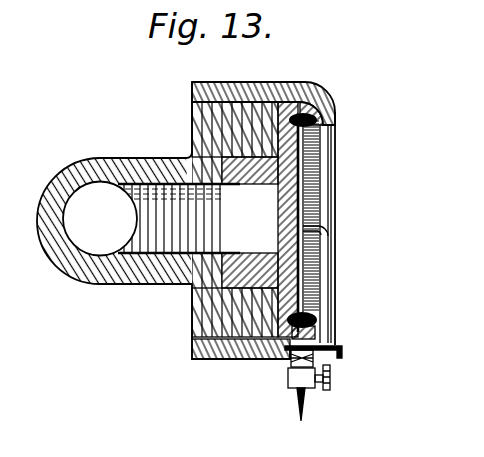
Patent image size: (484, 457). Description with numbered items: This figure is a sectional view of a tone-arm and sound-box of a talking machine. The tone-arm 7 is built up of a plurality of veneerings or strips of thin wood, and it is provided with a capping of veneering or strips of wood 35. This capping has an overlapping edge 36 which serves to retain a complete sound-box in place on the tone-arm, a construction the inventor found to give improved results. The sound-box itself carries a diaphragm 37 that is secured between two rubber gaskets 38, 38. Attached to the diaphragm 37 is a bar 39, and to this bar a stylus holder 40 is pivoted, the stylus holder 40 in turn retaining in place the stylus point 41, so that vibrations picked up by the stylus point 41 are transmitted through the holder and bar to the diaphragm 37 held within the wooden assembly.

The tone-arm 7 is at (135, 157).
The capping of veneering or strips of wood 35 is at (193, 82).
The overlapping edge 36 is at (341, 96).
The diaphragm 37 is at (300, 166).
The rubber gaskets 38 is at (303, 82).
The bar 39 is at (331, 290).
The stylus holder 40 is at (289, 368).
The stylus point 41 is at (306, 410).